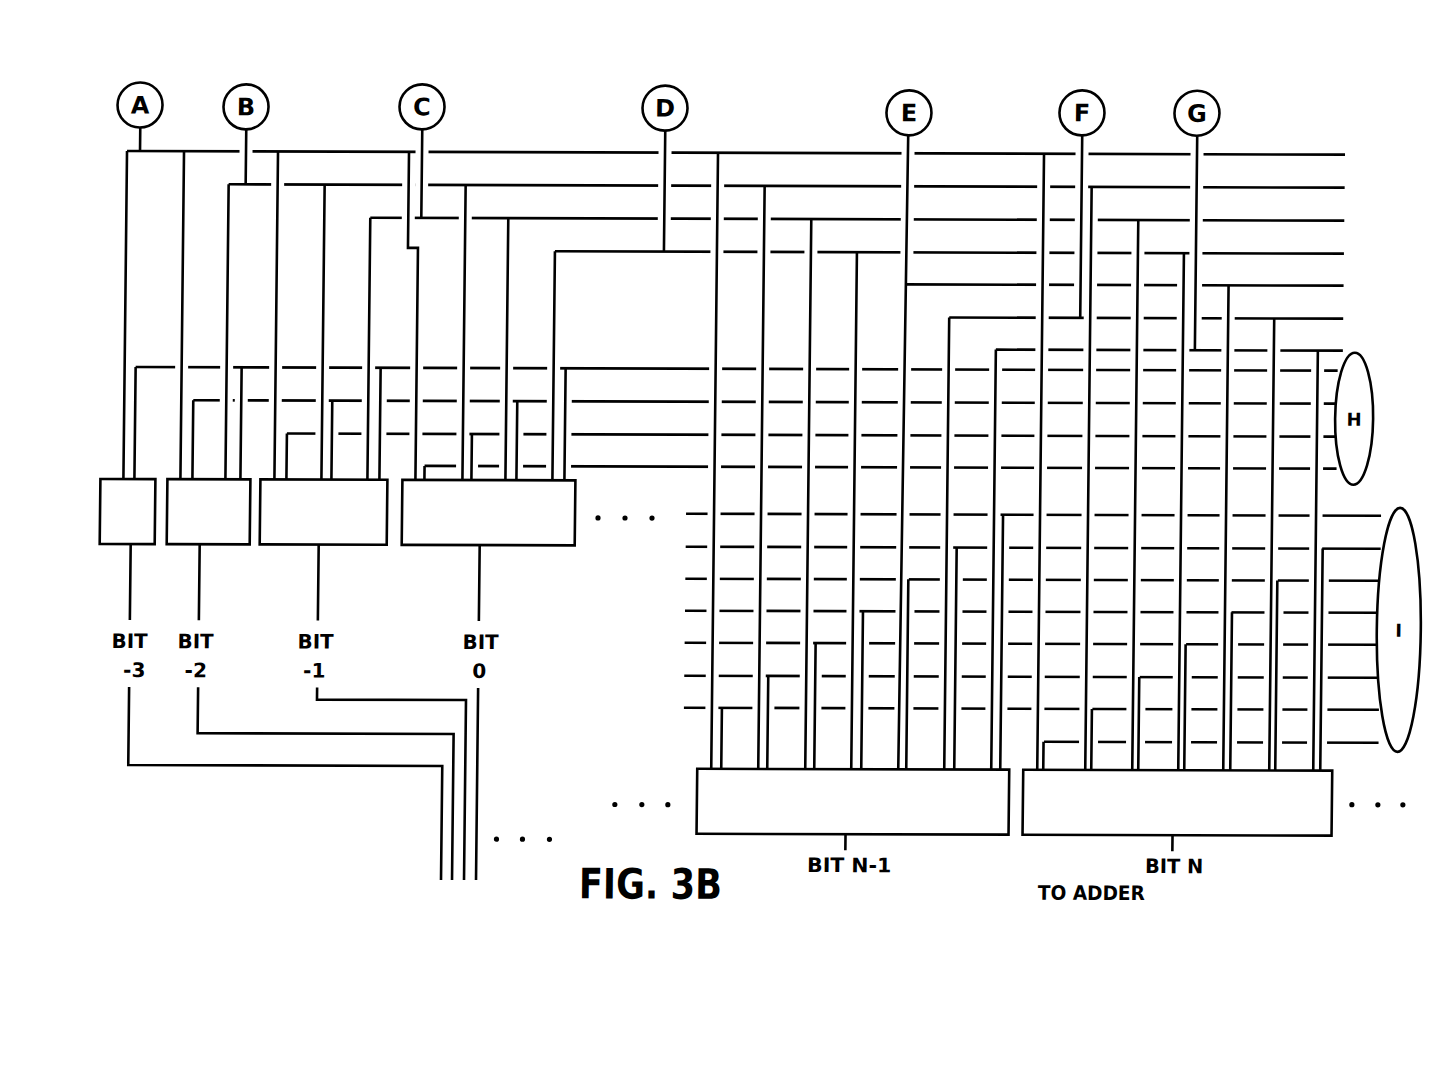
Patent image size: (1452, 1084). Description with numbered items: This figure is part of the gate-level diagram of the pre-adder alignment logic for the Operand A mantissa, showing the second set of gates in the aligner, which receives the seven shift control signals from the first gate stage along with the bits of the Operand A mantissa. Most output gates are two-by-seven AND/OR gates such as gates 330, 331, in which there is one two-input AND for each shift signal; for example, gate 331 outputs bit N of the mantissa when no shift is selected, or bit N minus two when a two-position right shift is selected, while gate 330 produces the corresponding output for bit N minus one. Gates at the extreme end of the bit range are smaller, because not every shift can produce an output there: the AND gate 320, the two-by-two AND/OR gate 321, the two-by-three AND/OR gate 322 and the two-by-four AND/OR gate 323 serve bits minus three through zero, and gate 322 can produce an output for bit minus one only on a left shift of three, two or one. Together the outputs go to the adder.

The AND gate 320 is at (147, 545).
The 2×2 AND/OR gate 321 is at (230, 545).
The 2×3 AND/OR gate 322 is at (350, 545).
The 2×4 AND/OR gate 323 is at (542, 546).
The 2×7 AND/OR gate 330 is at (966, 832).
The 2×7 AND/OR gate 331 is at (1290, 833).